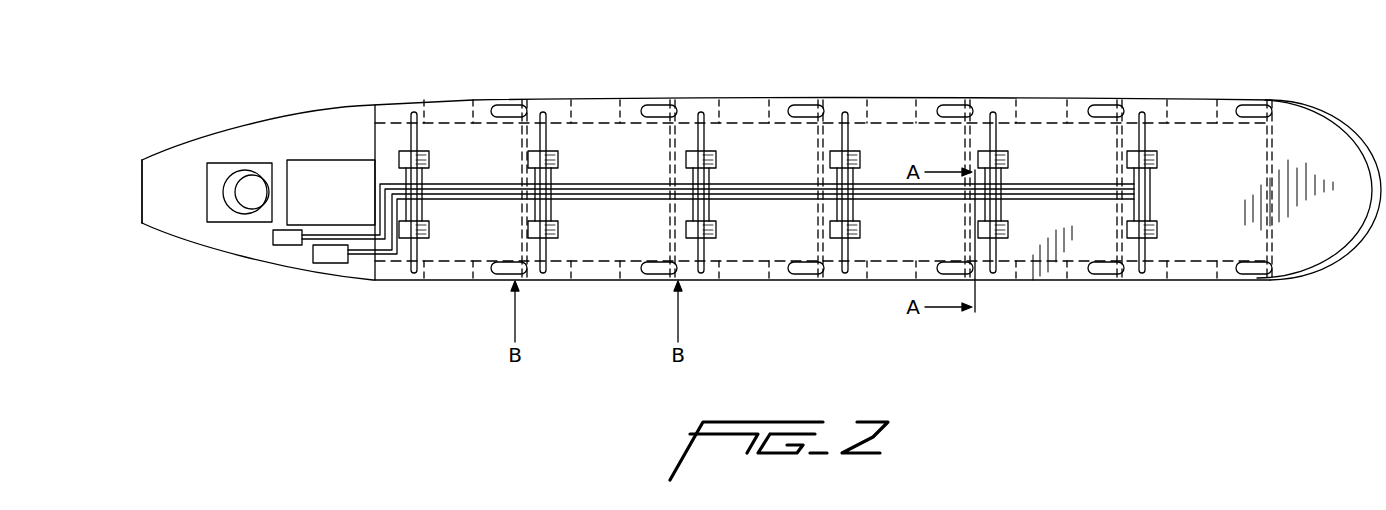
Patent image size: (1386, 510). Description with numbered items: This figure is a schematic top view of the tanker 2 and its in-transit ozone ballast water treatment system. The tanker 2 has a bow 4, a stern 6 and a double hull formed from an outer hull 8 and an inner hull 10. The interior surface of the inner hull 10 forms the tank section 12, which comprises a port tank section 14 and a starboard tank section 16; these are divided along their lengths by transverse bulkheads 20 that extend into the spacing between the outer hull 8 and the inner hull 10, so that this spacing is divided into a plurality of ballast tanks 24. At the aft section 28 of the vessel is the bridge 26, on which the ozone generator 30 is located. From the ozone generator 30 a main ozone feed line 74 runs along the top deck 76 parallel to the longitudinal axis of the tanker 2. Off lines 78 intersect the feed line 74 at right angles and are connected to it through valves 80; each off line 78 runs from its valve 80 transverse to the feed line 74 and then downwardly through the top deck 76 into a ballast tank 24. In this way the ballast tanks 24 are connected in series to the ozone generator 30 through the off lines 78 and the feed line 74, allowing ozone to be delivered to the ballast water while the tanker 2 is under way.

The tanker 2 is at (858, 95).
The bow 4 is at (1385, 195).
The stern 6 is at (163, 150).
The outer hull 8 is at (390, 103).
The inner hull 10 is at (613, 124).
The tank section 12 is at (1040, 140).
The port tank section 14 is at (773, 130).
The starboard tank section 16 is at (763, 278).
The transverse bulkheads 20 is at (522, 172).
The ballast tanks 24 is at (450, 112).
The bridge 26 is at (325, 138).
The aft section 28 is at (198, 248).
The ozone generator 30 is at (328, 260).
The main ozone feed line 74 is at (500, 200).
The top deck 76 is at (950, 240).
The off lines 78 is at (549, 130).
The valves 80 is at (430, 160).